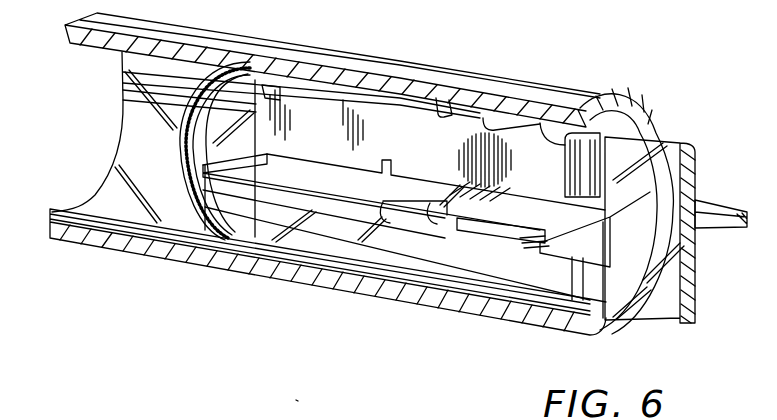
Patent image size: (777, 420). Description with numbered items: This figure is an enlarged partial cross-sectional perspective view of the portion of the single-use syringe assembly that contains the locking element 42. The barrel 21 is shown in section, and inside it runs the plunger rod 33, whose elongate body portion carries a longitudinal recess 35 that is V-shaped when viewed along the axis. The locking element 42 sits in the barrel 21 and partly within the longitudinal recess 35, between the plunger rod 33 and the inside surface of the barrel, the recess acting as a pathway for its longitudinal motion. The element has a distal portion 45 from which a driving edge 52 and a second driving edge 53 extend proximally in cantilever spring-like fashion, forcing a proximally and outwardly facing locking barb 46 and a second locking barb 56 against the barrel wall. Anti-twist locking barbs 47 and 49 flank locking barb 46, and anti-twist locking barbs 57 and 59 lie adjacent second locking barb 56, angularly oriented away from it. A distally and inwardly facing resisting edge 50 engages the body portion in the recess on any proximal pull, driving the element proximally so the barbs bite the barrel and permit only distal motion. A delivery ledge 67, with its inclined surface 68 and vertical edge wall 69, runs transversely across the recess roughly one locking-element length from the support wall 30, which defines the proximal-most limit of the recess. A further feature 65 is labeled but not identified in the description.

The barrel 21 is at (337, 295).
The support wall 30 is at (230, 242).
The plunger rod 33 is at (320, 233).
The longitudinal recess 35 is at (607, 200).
The locking element 42 is at (347, 127).
The distal portion 45 is at (278, 97).
The locking barb 46 is at (490, 215).
The anti twist locking barb 47 is at (430, 203).
The anti twist locking barb 49 is at (397, 203).
The resisting edge 50 is at (247, 120).
The driving edge 52 is at (570, 207).
The second driving edge 53 is at (627, 178).
The second locking barb 56 is at (542, 120).
The anti twist locking barb 57 is at (488, 120).
The anti twist locking barb 59 is at (440, 98).
The base 65 is at (295, 410).
The delivery ledge 67 is at (527, 238).
The inclined surface 68 is at (530, 243).
The vertical edge wall 69 is at (533, 247).